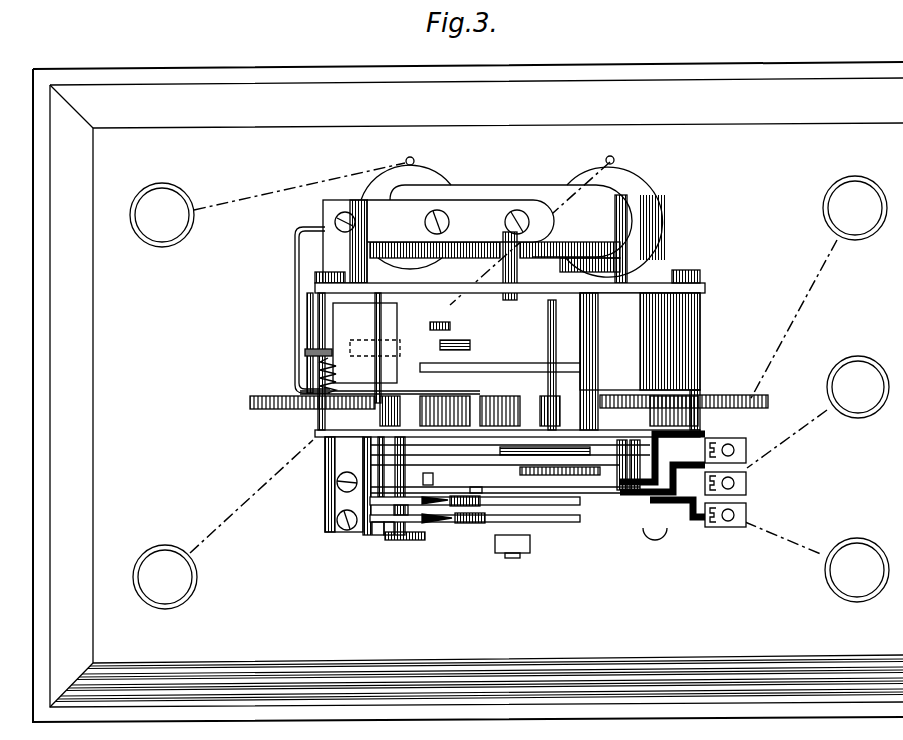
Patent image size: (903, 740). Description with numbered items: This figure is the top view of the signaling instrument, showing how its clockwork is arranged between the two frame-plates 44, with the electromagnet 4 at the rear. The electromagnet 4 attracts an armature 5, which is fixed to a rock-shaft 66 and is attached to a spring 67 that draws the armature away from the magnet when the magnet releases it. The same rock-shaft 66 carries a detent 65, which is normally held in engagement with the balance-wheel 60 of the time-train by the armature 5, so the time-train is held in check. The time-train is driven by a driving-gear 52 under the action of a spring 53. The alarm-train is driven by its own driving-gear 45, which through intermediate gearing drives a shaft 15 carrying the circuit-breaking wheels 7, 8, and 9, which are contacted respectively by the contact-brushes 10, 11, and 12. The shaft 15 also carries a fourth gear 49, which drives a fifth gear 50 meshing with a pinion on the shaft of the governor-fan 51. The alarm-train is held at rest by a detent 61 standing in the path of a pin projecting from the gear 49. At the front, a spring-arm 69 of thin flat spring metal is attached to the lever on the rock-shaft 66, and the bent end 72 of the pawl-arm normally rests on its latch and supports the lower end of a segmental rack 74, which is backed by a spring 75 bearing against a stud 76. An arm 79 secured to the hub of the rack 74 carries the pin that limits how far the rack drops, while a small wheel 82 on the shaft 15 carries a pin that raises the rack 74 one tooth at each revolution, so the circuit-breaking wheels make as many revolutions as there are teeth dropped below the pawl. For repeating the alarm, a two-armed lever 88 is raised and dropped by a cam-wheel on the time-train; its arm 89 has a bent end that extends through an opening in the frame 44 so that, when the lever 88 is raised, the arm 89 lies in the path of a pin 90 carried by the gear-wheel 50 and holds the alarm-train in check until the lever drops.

The electromagnet 4 is at (513, 216).
The armature 5 is at (511, 234).
The circuit-breaking wheel 7 is at (372, 530).
The circuit-breaking wheel 8 is at (383, 526).
The circuit-breaking wheel 9 is at (396, 518).
The contact-brush 10 is at (470, 505).
The contact-brush 11 is at (478, 495).
The contact-brush 12 is at (492, 523).
The shaft 15 is at (403, 522).
The frame-plates 44 is at (700, 287).
The driving-gear 45 is at (266, 398).
The fourth gear 49 is at (455, 350).
The fifth gear 50 is at (318, 412).
The governor-fan 51 is at (366, 348).
The driving-gear 52 is at (727, 400).
The spring 53 is at (640, 361).
The balance-wheel 60 is at (553, 392).
The detent 61 is at (318, 352).
The detent 65 is at (296, 262).
The rock-shaft 66 is at (345, 198).
The spring 67 is at (512, 234).
The spring-arm 69 is at (439, 478).
The bent end 72 is at (330, 512).
The segmental rack 74 is at (457, 470).
The spring 75 is at (636, 478).
The stud 76 is at (621, 462).
The arm 79 is at (580, 444).
The small wheel 82 is at (360, 468).
The two-armed lever 88 is at (585, 472).
The arm 89 is at (358, 442).
The pin 90 is at (318, 433).